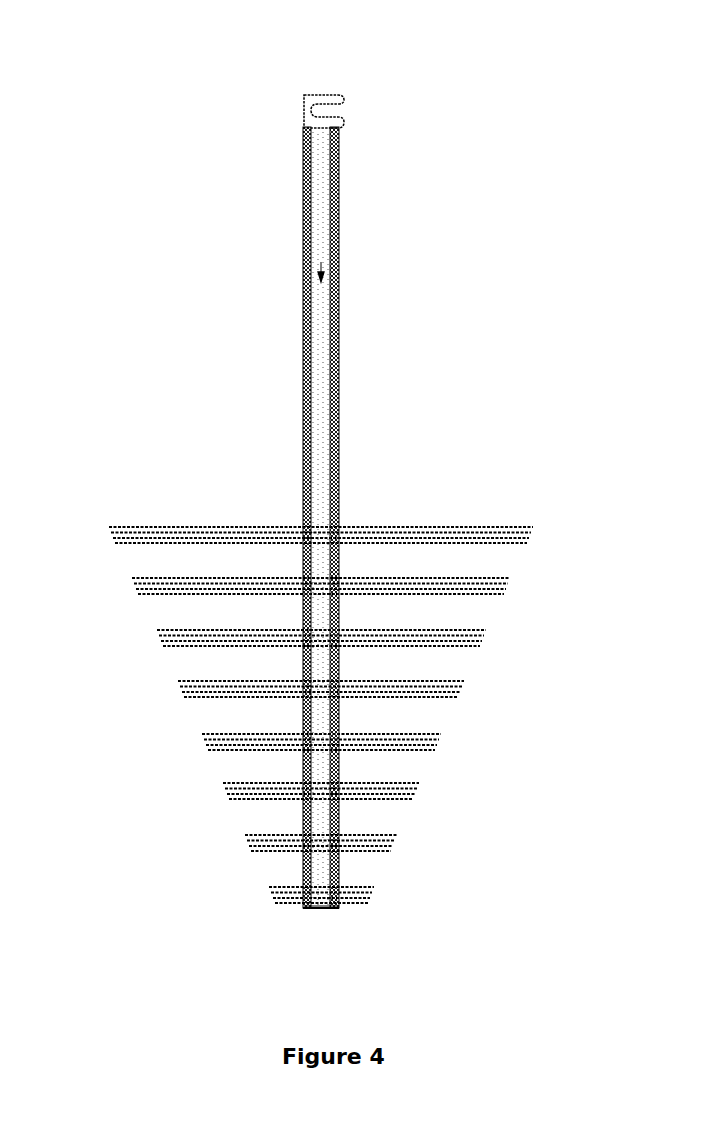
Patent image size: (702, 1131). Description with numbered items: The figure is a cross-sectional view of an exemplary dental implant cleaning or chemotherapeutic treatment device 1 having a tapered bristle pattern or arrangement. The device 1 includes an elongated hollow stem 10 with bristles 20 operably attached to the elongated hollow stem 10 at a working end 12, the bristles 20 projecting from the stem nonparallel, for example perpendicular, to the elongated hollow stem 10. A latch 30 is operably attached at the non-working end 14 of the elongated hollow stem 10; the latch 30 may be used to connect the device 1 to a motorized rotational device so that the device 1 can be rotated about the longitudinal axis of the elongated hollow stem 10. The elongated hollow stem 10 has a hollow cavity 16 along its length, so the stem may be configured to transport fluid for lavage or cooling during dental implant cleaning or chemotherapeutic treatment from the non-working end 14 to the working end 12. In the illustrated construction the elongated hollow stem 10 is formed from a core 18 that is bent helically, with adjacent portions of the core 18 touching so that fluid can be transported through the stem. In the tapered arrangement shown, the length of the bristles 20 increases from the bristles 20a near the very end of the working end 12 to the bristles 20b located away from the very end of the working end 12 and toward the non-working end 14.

The dental implant cleaning or chemotherapeutic treatment device 1 is at (193, 108).
The elongated hollow stem 10 is at (340, 468).
The working end 12 is at (340, 866).
The non-working end 14 is at (340, 153).
The hollow cavity 16 is at (340, 238).
The core 18 is at (340, 387).
The bristles 20 is at (84, 517).
The bristles near the very end of the working end 20a is at (392, 898).
The bristles away from the very end of the working end 20b is at (538, 542).
The latch 30 is at (345, 98).